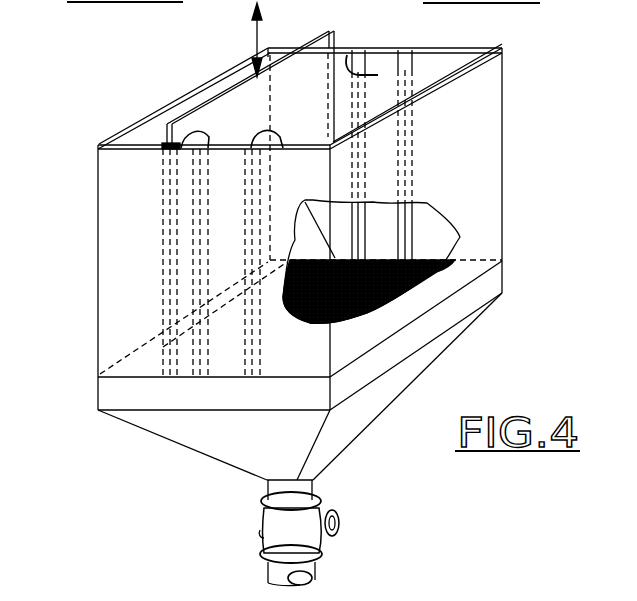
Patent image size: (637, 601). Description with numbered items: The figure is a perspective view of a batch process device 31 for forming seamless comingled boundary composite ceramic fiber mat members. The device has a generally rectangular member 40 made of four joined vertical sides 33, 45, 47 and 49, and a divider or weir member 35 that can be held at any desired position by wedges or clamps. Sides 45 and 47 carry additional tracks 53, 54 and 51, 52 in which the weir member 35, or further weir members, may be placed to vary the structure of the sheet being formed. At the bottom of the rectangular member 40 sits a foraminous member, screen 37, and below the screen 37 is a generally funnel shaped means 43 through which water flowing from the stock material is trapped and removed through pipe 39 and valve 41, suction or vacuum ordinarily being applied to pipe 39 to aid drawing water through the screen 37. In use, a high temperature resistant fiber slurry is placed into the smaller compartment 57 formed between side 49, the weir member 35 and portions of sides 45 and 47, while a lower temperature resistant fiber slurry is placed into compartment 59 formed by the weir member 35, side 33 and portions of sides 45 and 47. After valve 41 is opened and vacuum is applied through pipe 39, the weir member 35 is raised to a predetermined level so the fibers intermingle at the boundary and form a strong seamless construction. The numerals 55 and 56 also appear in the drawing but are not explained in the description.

The batch process device 31 is at (96, 126).
The vertical side 33 is at (482, 139).
The weir member 35 is at (308, 108).
The screen 37 is at (452, 268).
The pipe 39 is at (310, 489).
The generally rectangular member 40 is at (97, 299).
The valve 41 is at (273, 522).
The funnel shaped means 43 is at (199, 439).
The vertical side 45 is at (347, 56).
The vertical side 47 is at (150, 306).
The vertical side 49 is at (191, 97).
The track 51 is at (406, 67).
The track 52 is at (283, 146).
The track 53 is at (360, 58).
The track 54 is at (205, 132).
The tube connector 55 is at (160, 150).
The interior partition 56 is at (318, 200).
The smaller compartment 57 is at (237, 79).
The compartment 59 is at (435, 84).